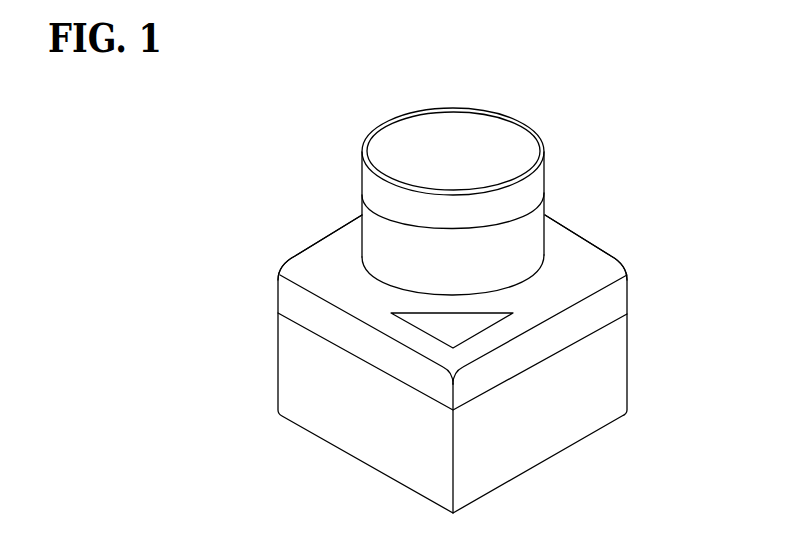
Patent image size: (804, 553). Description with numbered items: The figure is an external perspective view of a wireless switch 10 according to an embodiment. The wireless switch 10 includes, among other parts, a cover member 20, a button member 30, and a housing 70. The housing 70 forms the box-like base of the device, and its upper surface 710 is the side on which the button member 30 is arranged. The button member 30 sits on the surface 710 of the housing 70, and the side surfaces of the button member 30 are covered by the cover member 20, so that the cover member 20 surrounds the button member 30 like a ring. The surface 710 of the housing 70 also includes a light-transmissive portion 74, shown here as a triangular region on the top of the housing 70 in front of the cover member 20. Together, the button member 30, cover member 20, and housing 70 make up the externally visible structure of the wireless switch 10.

The wireless switch 10 is at (648, 160).
The cover member 20 is at (528, 187).
The button member 30 is at (493, 127).
The housing 70 is at (622, 350).
The surface 710 is at (317, 270).
The light-transmissive portion 74 is at (434, 327).